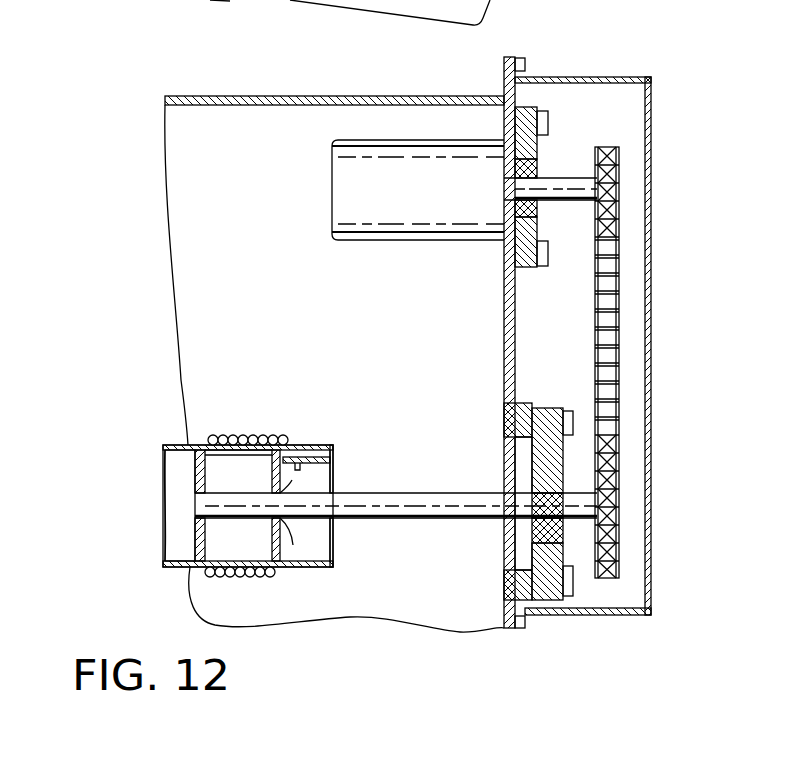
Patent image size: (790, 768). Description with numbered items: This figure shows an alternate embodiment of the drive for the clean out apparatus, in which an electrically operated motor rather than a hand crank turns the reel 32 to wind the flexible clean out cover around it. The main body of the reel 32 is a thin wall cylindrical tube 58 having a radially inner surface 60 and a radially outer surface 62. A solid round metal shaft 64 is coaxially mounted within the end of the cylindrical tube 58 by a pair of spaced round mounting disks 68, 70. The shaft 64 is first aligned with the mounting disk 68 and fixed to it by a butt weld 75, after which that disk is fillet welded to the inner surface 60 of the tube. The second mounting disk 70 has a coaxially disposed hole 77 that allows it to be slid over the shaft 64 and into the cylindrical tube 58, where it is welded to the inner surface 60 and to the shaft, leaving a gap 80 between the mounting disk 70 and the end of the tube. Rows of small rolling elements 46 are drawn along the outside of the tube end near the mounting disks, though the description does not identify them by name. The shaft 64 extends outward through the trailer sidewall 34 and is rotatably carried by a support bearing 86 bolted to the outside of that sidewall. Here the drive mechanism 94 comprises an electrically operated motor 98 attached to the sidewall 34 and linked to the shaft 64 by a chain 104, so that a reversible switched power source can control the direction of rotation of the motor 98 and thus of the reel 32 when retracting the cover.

The reel 32 is at (167, 437).
The sidewall 34 is at (511, 56).
The ball bearings 46 is at (263, 434).
The cylindrical tube 58 is at (174, 566).
The radially inner surface 60 is at (177, 493).
The radially outer surface 62 is at (313, 568).
The shaft 64 is at (418, 498).
The mounting disk 68 is at (207, 545).
The mounting disk 70 is at (290, 540).
The butt weld 75 is at (213, 455).
The hole 77 is at (296, 527).
The gap 80 is at (342, 477).
The support bearing 86 is at (553, 626).
The drive mechanism 94 is at (668, 100).
The electrically operated motor 98 is at (342, 143).
The chain 104 is at (620, 315).